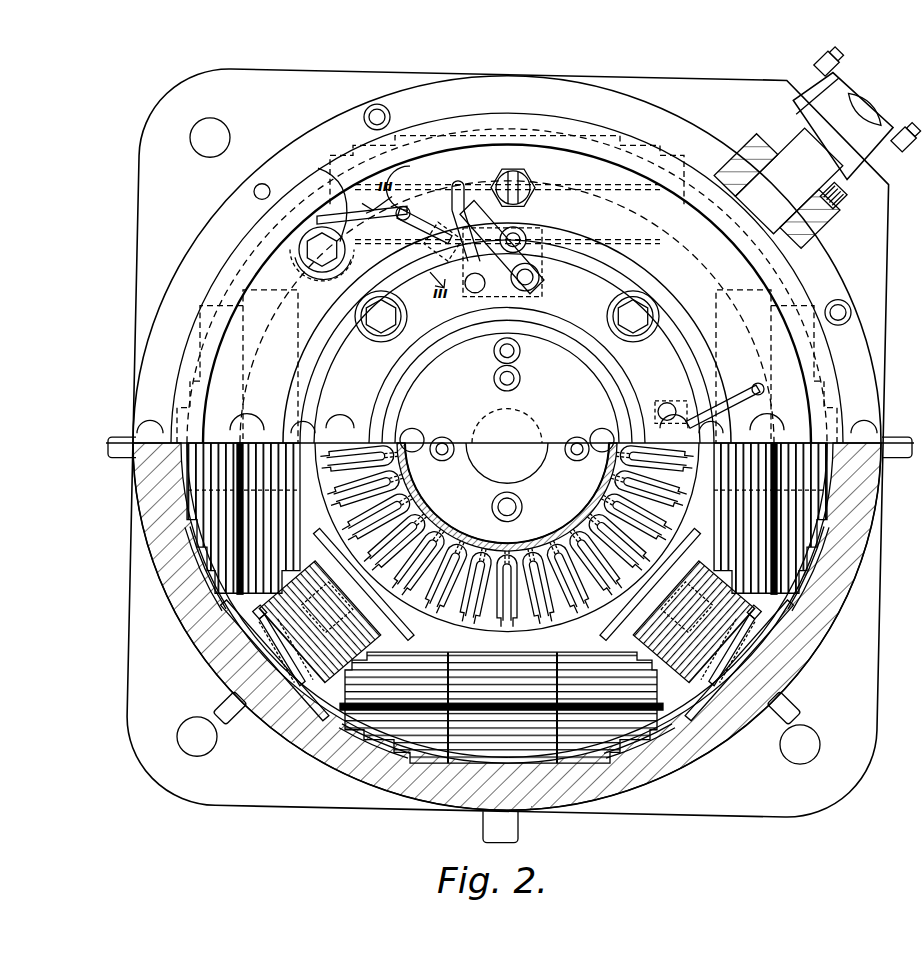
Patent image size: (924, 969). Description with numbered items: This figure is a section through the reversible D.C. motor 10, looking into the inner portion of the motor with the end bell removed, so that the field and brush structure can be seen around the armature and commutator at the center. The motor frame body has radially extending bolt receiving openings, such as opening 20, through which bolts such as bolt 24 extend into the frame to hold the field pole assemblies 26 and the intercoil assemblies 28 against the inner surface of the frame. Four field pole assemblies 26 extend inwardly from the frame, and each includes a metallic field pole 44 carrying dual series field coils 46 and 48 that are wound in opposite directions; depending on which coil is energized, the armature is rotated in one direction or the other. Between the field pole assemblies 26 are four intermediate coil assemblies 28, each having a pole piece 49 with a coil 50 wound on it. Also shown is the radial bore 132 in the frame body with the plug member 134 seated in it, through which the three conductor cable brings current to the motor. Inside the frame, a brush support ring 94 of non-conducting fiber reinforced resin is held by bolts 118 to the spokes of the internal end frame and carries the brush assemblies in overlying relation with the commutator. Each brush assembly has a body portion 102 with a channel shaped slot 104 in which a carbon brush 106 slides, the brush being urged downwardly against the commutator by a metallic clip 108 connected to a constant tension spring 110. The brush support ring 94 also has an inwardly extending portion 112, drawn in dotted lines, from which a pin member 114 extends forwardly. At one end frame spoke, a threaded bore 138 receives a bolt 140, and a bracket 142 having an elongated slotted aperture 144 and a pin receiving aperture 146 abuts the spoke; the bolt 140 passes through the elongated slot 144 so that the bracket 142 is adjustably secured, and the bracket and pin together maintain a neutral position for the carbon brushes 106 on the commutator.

The reversible D.C. motor 10 is at (374, 42).
The bolt receiving opening 20 is at (237, 712).
The bolt 24 is at (115, 457).
The field pole assembly 26 is at (540, 126).
The intercoil assembly 28 is at (245, 674).
The field pole 44 is at (325, 369).
The field coil 46 is at (592, 124).
The field coil 48 is at (645, 212).
The pole piece 49 is at (400, 638).
The coil 50 is at (247, 646).
The brush support ring 94 is at (677, 278).
The body portion 102 is at (471, 198).
The channel shaped slot 104 is at (522, 200).
The carbon brush 106 is at (537, 291).
The metallic clip 108 is at (470, 170).
The constant tension spring 110 is at (470, 290).
The inwardly extending portion 112 is at (444, 219).
The pin member 114 is at (377, 219).
The bolt 118 is at (368, 320).
The radial bore 132 is at (817, 234).
The plug member 134 is at (828, 218).
The threaded bore 138 is at (297, 260).
The bolt 140 is at (338, 274).
The bracket 142 is at (320, 165).
The elongated slotted aperture 144 is at (297, 256).
The pin receiving aperture 146 is at (405, 173).